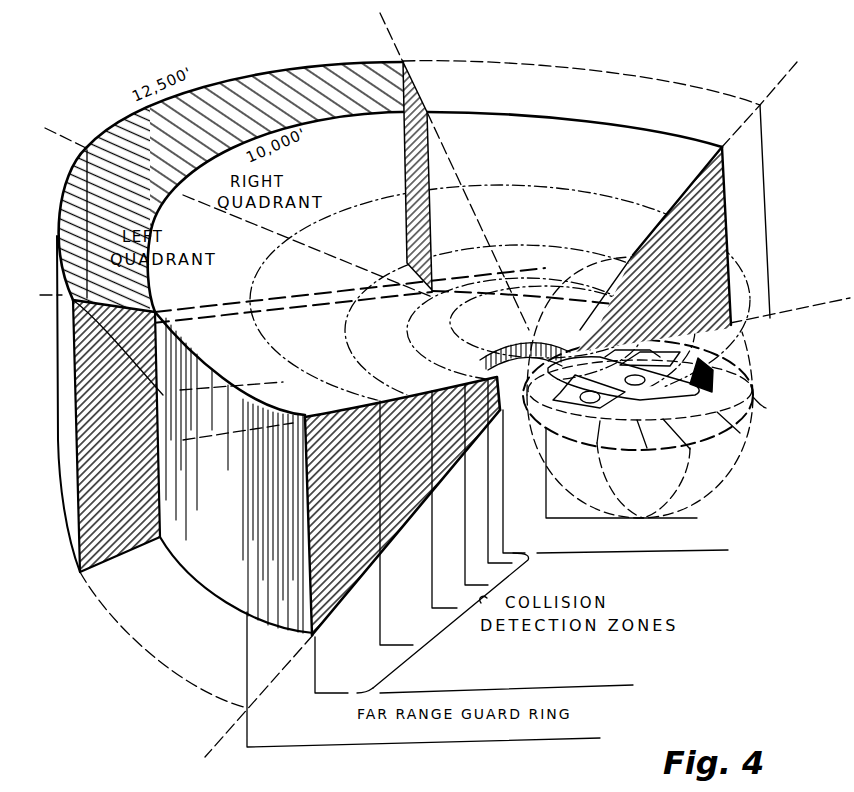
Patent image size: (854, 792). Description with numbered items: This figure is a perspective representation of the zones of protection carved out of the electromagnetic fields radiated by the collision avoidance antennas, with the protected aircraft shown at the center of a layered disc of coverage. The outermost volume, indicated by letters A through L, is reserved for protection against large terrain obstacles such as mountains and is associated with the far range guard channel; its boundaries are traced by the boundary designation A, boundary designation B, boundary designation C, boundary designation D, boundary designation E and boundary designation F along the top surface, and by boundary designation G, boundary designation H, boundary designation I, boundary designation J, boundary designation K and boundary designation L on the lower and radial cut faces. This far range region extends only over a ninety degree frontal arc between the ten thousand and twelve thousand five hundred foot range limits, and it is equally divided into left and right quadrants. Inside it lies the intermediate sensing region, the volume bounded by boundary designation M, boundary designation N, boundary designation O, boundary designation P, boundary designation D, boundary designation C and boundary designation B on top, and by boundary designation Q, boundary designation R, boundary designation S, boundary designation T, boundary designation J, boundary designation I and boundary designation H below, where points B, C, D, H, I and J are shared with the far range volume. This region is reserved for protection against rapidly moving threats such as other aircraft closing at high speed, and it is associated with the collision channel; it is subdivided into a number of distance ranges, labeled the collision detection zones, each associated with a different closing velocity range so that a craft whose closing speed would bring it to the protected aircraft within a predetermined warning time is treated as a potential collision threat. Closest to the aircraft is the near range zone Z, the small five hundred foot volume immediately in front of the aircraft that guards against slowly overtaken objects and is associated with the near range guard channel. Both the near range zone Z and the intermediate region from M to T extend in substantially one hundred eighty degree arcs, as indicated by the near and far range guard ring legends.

The far range region boundary designation A is at (107, 433).
The far range and intermediate region boundary designation B is at (230, 414).
The far range and intermediate region boundary designation C is at (287, 212).
The far range and intermediate region boundary designation D is at (574, 120).
The far range region boundary designation E is at (243, 177).
The far range region boundary designation F is at (73, 351).
The far range region boundary designation G is at (112, 566).
The far range and intermediate region boundary designation H is at (231, 475).
The far range and intermediate region boundary designation I is at (93, 393).
The far range and intermediate region boundary designation J is at (581, 304).
The far range region boundary designation K is at (410, 176).
The far range region boundary designation L is at (118, 436).
The intermediate sensing region boundary designation M is at (400, 506).
The intermediate sensing region boundary designation N is at (402, 388).
The intermediate sensing region boundary designation O is at (560, 327).
The intermediate sensing region boundary designation P is at (653, 238).
The intermediate sensing region boundary designation Q is at (406, 530).
The intermediate sensing region boundary designation R is at (452, 512).
The intermediate sensing region boundary designation S is at (530, 356).
The intermediate sensing region boundary designation T is at (660, 405).
The near range zone Z is at (527, 378).